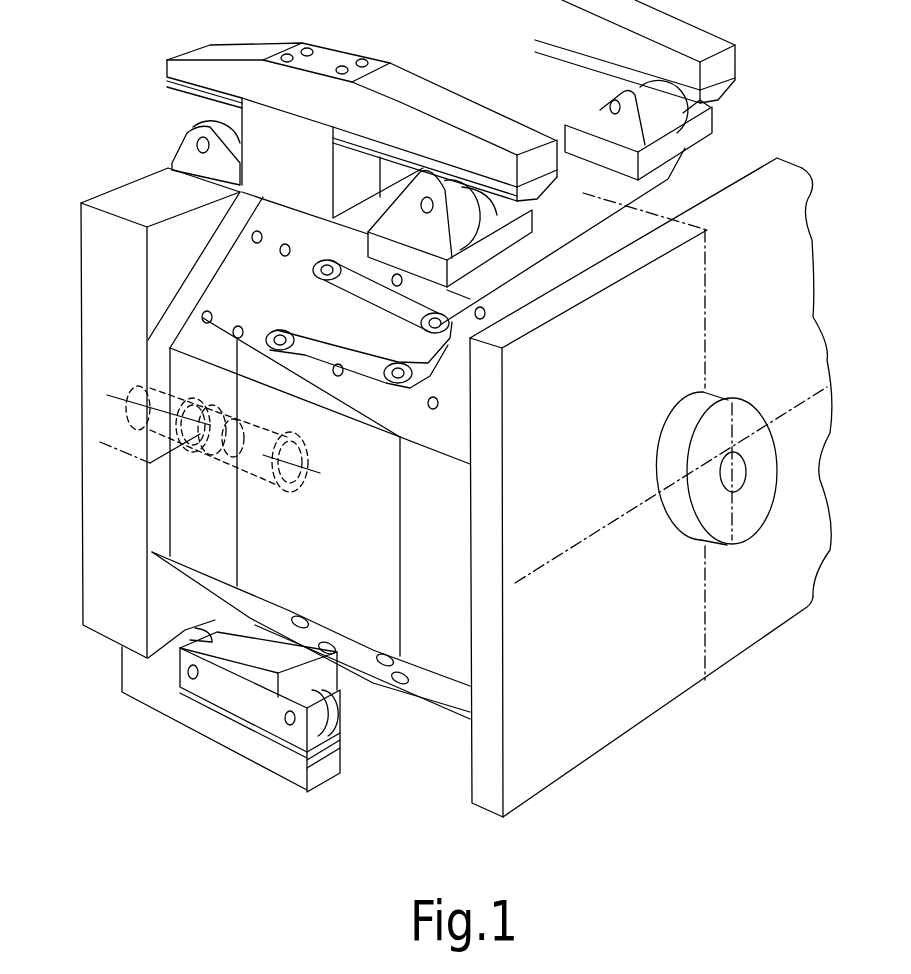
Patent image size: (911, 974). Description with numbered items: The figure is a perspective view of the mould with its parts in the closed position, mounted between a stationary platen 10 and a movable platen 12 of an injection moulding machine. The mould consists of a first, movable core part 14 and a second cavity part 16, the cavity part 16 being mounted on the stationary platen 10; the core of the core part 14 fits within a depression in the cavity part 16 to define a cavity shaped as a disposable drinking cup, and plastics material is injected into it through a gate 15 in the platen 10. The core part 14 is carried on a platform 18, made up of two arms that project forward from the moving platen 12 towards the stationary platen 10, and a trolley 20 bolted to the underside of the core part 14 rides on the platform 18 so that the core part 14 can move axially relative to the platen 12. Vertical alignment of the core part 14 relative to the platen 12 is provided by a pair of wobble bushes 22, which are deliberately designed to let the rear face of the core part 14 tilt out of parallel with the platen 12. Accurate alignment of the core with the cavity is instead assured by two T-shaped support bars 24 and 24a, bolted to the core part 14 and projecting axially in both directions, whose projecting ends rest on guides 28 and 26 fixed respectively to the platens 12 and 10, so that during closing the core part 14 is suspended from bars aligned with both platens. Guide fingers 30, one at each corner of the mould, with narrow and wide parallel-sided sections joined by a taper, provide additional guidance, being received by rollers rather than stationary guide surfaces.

The stationary platen 10 is at (797, 245).
The movable platen 12 is at (100, 268).
The first part (core part) 14 is at (190, 375).
The gate 15 is at (745, 420).
The second part (cavity part) 16 is at (357, 603).
The platform 18 is at (197, 733).
The trolley 20 is at (250, 700).
The wobble bushes 22 is at (200, 434).
The support bar (T-bar) 24 is at (383, 127).
The support bar (T-bar) 24a is at (722, 60).
The guide 26 is at (483, 225).
The guide 28 is at (165, 128).
The guide fingers 30 is at (358, 327).